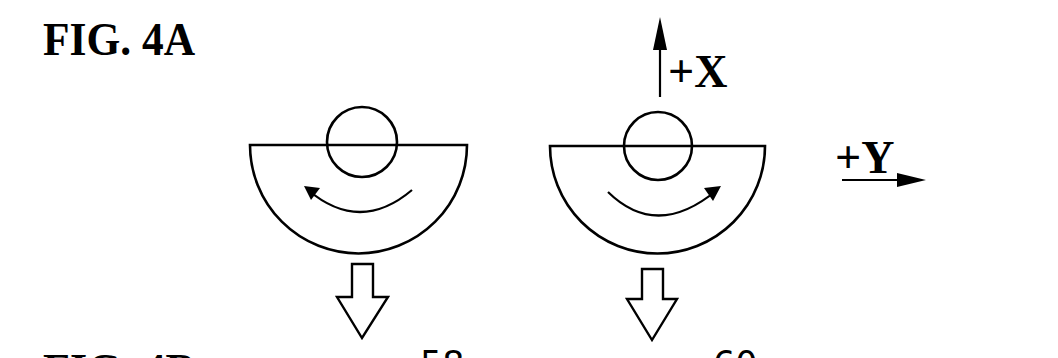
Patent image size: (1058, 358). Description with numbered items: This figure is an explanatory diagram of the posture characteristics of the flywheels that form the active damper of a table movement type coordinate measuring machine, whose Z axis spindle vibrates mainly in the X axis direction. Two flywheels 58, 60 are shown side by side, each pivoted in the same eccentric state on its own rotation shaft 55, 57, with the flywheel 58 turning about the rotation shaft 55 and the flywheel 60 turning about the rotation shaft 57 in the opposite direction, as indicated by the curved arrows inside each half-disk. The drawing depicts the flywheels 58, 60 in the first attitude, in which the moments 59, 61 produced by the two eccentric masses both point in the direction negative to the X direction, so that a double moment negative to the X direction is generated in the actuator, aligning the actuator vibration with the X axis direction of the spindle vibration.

The rotation shaft 55 is at (360, 120).
The rotation shaft 57 is at (642, 128).
The flywheel 58 is at (440, 157).
The moment 59 is at (373, 283).
The flywheel 60 is at (737, 156).
The moment 61 is at (663, 287).